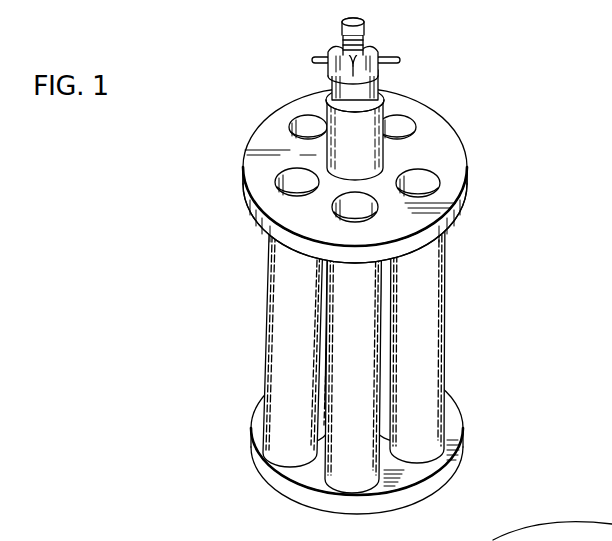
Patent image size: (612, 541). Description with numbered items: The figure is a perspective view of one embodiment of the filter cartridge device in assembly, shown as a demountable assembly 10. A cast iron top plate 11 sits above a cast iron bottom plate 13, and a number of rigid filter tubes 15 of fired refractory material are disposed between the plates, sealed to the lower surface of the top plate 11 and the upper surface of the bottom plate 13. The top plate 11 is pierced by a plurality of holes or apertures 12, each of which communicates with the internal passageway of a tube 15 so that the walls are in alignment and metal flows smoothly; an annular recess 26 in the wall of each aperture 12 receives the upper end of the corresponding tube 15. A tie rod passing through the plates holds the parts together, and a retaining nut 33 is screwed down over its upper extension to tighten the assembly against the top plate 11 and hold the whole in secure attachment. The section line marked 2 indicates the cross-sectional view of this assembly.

The demountable assembly 10 is at (395, 262).
The top plate 11 is at (462, 150).
The apertures 12 is at (438, 176).
The bottom plate 13 is at (455, 462).
The filter tubes 15 is at (443, 375).
The retaining nut 33 is at (337, 52).
The section line 2- 2 is at (492, 77).
The annular recess 26 is at (552, 531).